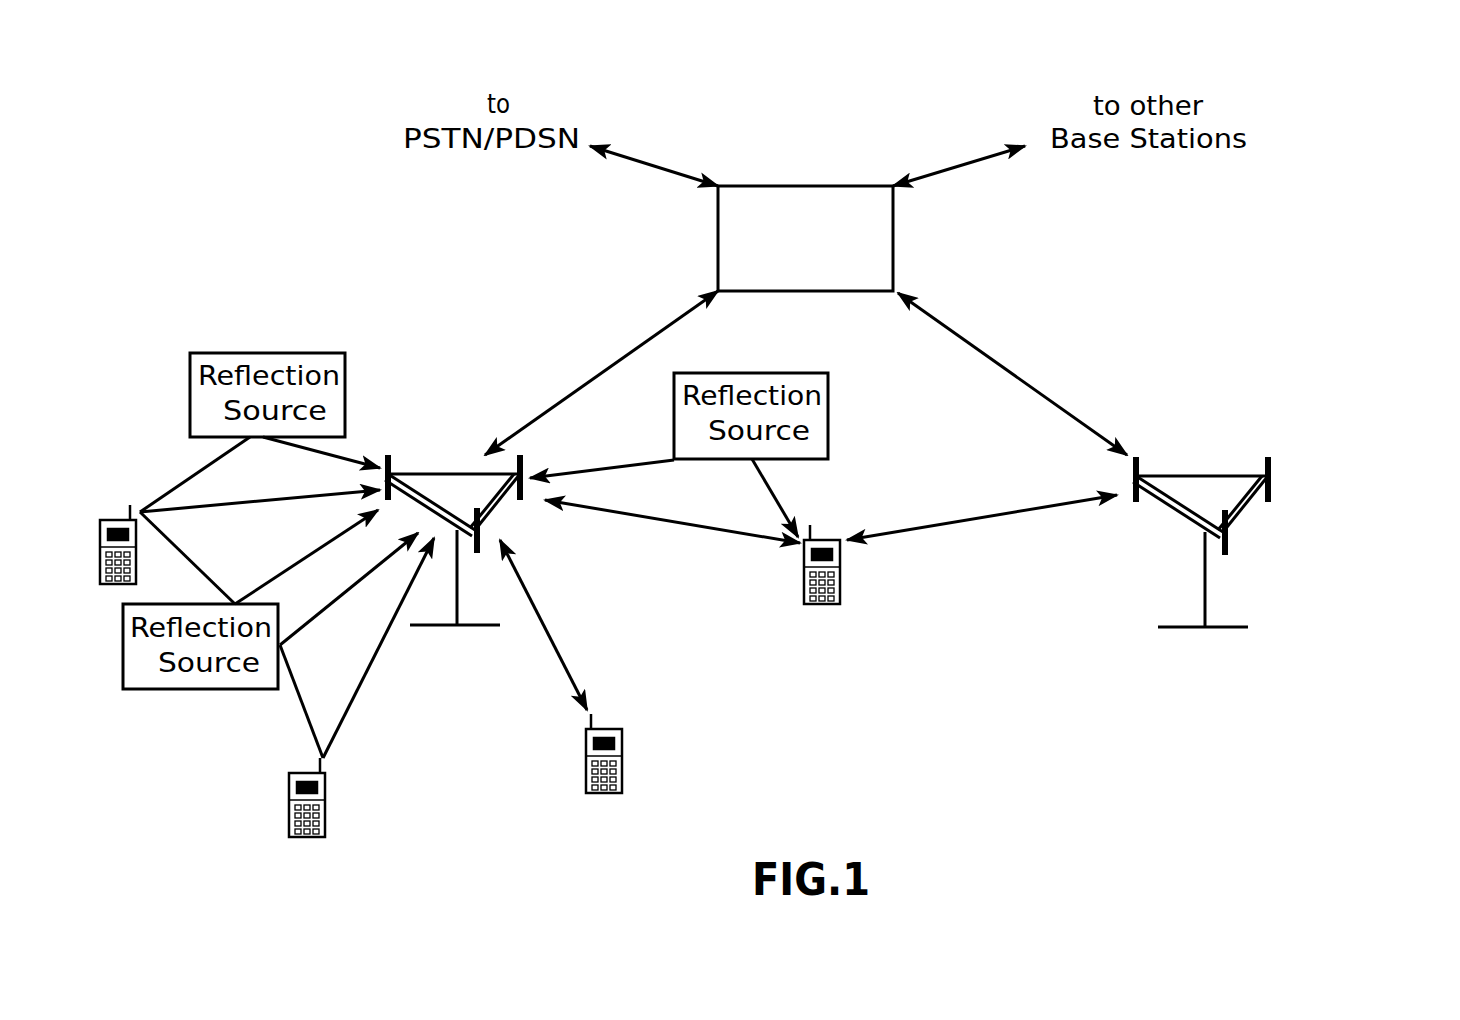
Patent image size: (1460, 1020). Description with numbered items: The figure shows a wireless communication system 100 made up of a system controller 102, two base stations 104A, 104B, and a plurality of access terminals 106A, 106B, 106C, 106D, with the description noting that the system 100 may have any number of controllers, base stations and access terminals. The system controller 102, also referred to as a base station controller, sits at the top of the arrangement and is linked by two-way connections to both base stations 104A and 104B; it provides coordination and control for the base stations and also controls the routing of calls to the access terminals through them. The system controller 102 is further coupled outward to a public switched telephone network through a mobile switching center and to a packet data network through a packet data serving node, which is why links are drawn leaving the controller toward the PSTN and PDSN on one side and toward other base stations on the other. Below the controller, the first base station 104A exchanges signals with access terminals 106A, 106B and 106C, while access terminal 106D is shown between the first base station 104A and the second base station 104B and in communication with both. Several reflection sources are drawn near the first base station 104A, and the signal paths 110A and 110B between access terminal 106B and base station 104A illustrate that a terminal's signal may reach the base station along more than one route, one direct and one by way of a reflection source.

The wireless communication system 100 is at (1396, 70).
The system controller 102 is at (800, 186).
The base station 104A is at (442, 474).
The base station 104B is at (1220, 475).
The access terminal 106A is at (115, 520).
The access terminal 106B is at (300, 772).
The access terminal 106C is at (608, 729).
The access terminal 106D is at (832, 540).
The direct signal path 110A is at (357, 688).
The reflected signal path 110B is at (318, 617).